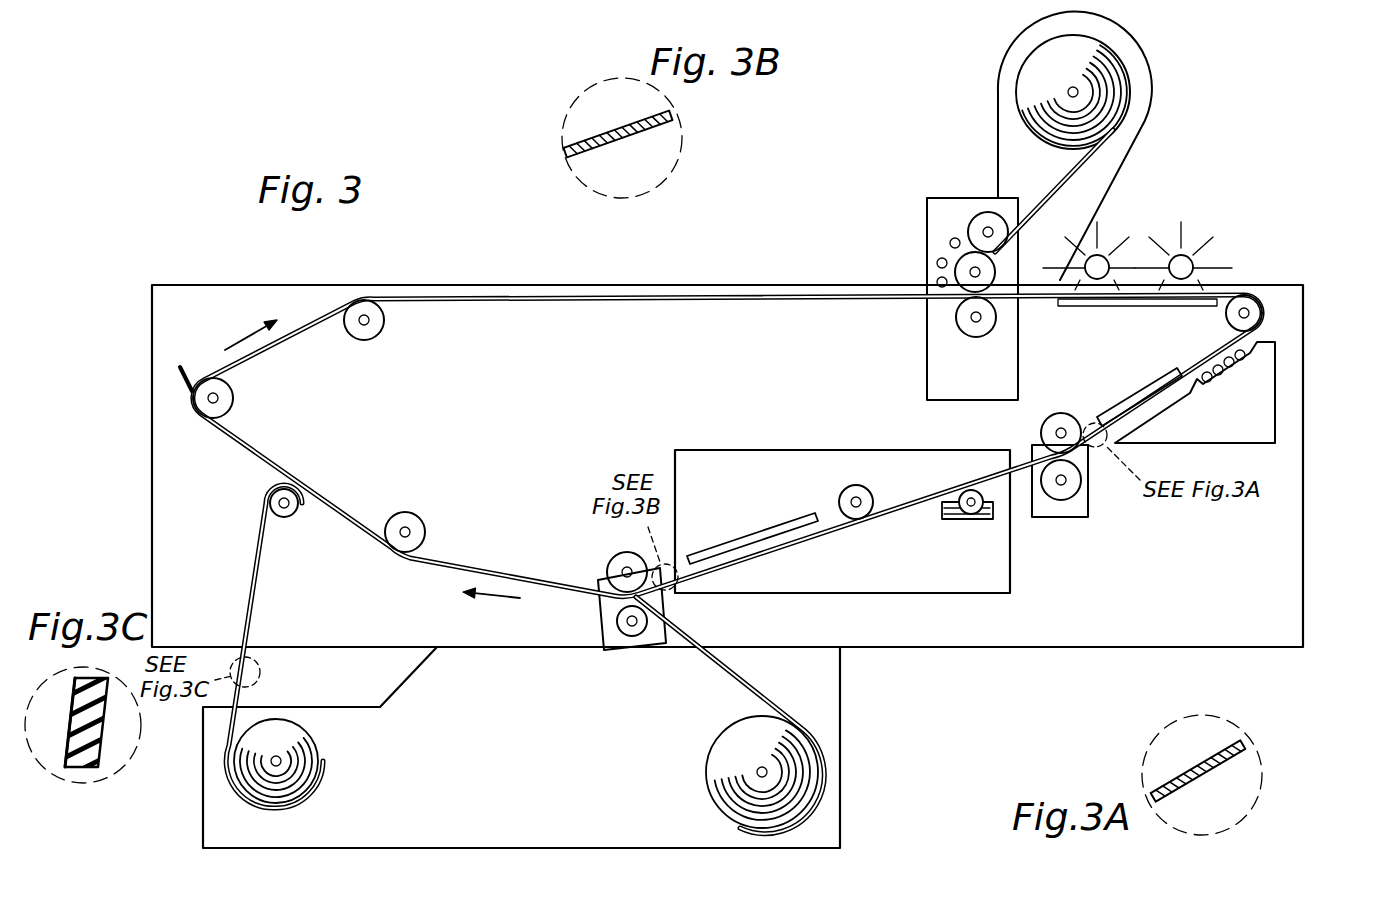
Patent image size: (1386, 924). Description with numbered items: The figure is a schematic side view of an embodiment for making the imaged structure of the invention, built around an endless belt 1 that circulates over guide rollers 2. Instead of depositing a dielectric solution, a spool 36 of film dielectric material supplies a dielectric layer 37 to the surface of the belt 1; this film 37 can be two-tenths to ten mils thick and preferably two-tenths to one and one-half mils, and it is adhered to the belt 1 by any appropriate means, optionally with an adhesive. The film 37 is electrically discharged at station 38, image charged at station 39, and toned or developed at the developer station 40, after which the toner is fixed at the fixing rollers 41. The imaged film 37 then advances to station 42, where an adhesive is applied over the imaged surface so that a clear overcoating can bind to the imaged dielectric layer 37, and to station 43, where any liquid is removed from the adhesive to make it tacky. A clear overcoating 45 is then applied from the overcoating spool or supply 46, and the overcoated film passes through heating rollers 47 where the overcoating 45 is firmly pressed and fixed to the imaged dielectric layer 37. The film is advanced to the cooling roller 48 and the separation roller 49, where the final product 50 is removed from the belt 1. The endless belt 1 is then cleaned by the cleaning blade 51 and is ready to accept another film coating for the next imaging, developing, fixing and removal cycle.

In FIG. 3, the endless belt 1 is at (300, 322).
In FIG. 3A, the endless belt 1 is at (1192, 762).
In FIG. 3B, the endless belt 1 is at (617, 128).
In FIG. 3, the guide roller 2 is at (383, 326).
In FIG. 3, the spool 36 is at (1120, 95).
In FIG. 3, the dielectric layer 37 is at (1058, 182).
In FIG. 3A, the dielectric layer 37 is at (1198, 782).
In FIG. 3B, the dielectric layer 37 is at (604, 150).
In FIG. 3C, the dielectric layer 37 is at (76, 722).
In FIG. 3, the station 38 is at (1110, 232).
In FIG. 3, the station 39 is at (1194, 232).
In FIG. 3, the developer station 40 is at (1248, 371).
In FIG. 3, the fixing rollers 41 is at (1041, 432).
In FIG. 3, the station 42 is at (975, 518).
In FIG. 3, the station 43 is at (760, 534).
In FIG. 3, the clear overcoating 45 is at (715, 680).
In FIG. 3C, the clear overcoating 45 is at (108, 740).
In FIG. 3, the overcoating spool 46 is at (815, 772).
In FIG. 3, the heating rollers 47 is at (617, 556).
In FIG. 3, the cooling roller 48 is at (425, 532).
In FIG. 3, the separation roller 49 is at (288, 517).
In FIG. 3, the final product 50 is at (256, 607).
In FIG. 3, the cleaning blade 51 is at (195, 392).